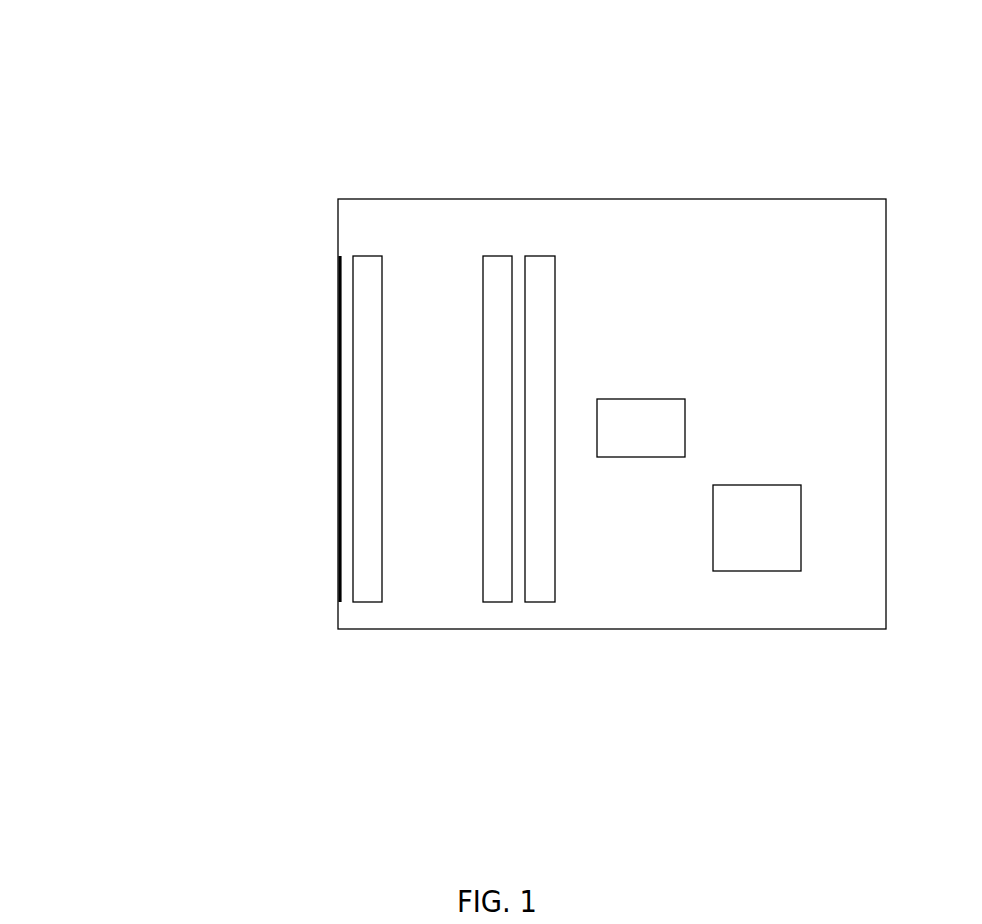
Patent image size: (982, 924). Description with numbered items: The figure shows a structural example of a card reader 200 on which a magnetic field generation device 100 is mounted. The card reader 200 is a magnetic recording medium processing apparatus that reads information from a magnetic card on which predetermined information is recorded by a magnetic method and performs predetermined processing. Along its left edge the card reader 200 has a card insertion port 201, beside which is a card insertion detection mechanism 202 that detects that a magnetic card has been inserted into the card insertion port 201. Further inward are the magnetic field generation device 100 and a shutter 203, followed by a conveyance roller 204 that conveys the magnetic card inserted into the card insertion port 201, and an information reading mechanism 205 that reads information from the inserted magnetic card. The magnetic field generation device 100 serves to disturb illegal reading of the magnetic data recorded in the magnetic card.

The card reader 200 is at (400, 108).
The card insertion port 201 is at (338, 275).
The card insertion detection mechanism 202 is at (370, 325).
The magnetic field generation device 100 is at (489, 595).
The shutter 203 is at (545, 256).
The conveyance roller 204 is at (609, 410).
The information reading mechanism 205 is at (754, 530).